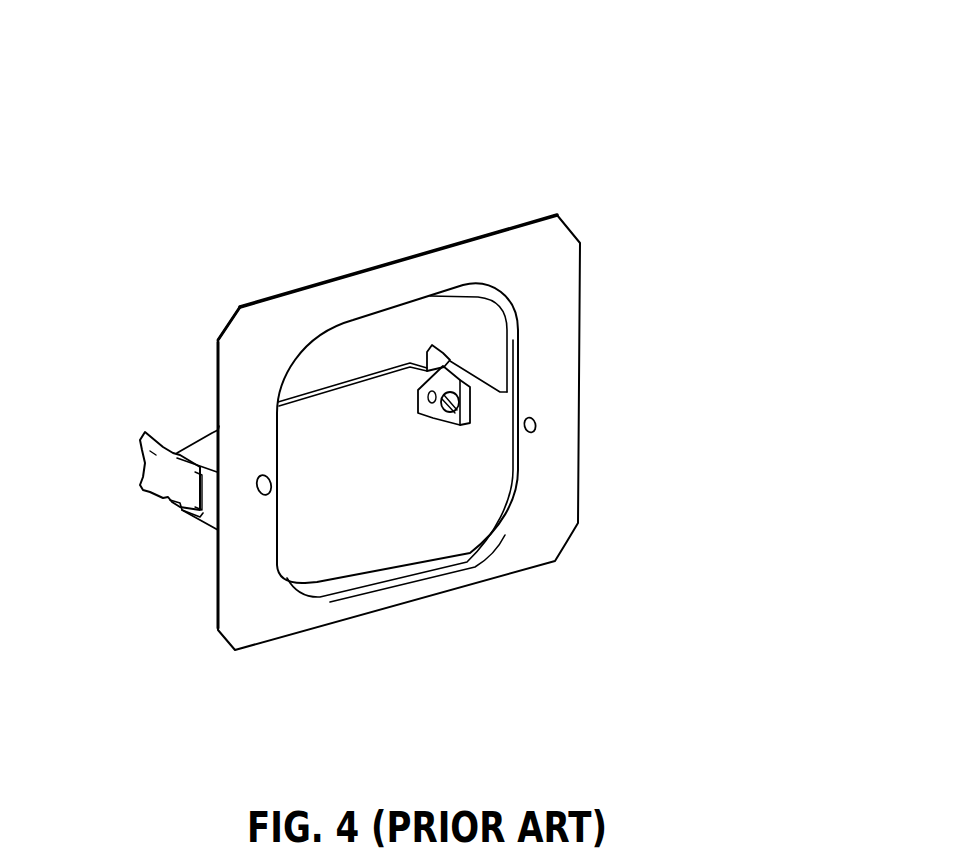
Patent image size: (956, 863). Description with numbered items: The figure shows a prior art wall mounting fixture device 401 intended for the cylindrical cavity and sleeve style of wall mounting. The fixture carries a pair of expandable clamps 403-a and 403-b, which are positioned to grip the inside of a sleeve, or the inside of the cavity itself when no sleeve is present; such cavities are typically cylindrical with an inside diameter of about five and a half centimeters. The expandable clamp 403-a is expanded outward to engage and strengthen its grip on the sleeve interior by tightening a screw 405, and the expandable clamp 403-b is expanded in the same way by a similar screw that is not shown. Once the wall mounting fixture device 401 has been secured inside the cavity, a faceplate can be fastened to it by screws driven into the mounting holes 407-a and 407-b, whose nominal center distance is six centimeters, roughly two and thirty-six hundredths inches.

The wall mounting fixture device 401 is at (650, 163).
The expandable clamp 403-a is at (427, 350).
The expandable clamp 403-b is at (140, 440).
The screw 405 is at (450, 407).
The mounting hole 407-a is at (537, 418).
The mounting hole 407-b is at (258, 494).